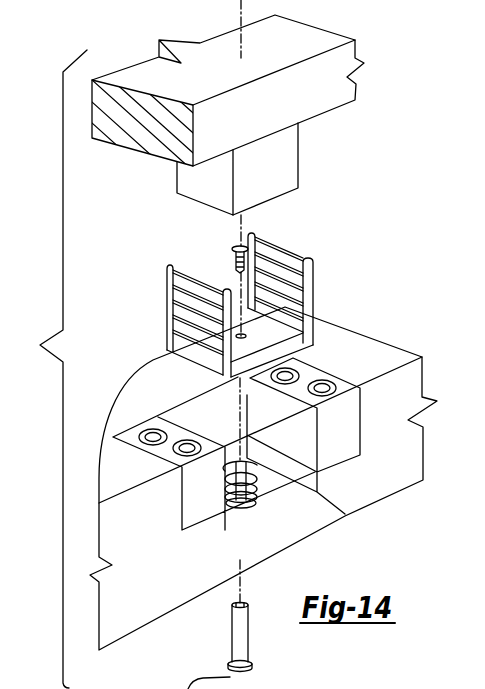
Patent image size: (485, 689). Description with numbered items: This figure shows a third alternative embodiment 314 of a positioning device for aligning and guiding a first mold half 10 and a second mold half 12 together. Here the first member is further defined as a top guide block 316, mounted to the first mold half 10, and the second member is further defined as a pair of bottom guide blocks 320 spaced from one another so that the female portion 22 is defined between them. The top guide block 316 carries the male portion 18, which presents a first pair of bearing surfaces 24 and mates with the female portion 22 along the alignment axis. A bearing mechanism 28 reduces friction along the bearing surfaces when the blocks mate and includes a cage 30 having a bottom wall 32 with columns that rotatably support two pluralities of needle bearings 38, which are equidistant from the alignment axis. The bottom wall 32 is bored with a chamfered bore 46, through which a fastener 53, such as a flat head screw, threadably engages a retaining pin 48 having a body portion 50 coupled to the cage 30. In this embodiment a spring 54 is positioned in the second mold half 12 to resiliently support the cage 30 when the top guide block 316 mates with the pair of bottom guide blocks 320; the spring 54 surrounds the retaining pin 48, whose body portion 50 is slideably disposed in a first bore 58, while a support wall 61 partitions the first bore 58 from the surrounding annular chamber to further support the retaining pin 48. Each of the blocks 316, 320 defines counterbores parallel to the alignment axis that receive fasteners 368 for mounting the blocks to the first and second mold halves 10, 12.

The first mold half 10 is at (357, 92).
The second mold half 12 is at (275, 489).
The male portion 18 is at (242, 169).
The female portion 22 is at (301, 516).
The first pair of bearing surfaces 24 is at (187, 182).
The bearing mechanism 28 is at (223, 262).
The cage 30 is at (246, 292).
The bottom wall 32 is at (290, 328).
The needle bearings 38 is at (173, 328).
The chamfered bore 46 is at (298, 345).
The retaining pin 48 is at (254, 637).
The body portion 50 is at (235, 628).
The fastener 53 is at (238, 248).
The spring 54 is at (258, 487).
The first bore 58 is at (240, 510).
The support wall 61 is at (257, 502).
The third alternative embodiment 314 is at (216, 107).
The top guide block 316 is at (298, 165).
The bottom guide blocks 320 is at (196, 520).
The fasteners 368 is at (187, 440).